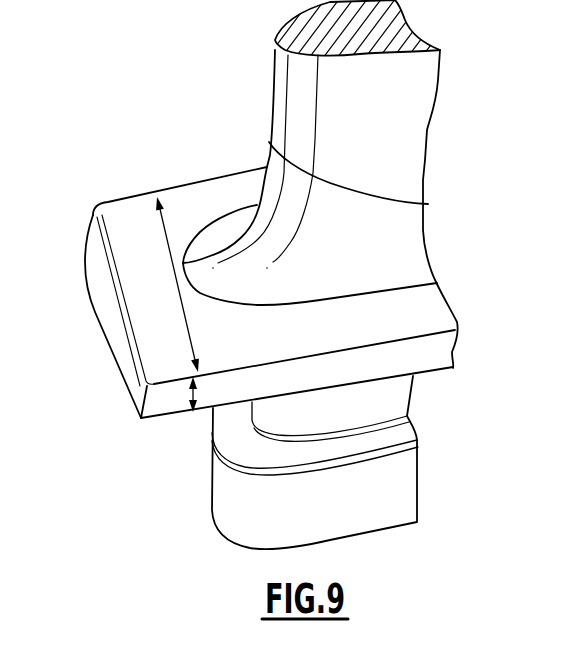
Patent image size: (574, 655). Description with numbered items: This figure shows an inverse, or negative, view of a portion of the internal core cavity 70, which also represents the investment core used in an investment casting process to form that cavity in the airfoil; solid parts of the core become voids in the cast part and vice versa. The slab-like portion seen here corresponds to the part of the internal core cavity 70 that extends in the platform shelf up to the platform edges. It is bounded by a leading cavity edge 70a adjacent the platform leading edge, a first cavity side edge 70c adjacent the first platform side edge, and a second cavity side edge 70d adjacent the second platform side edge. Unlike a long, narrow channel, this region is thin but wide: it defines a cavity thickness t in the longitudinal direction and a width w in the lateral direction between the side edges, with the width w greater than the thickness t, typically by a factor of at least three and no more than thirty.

The internal core cavity 70 is at (405, 150).
The leading cavity edge 70a is at (103, 293).
The first cavity side edge 70c is at (163, 400).
The second cavity side edge 70d is at (127, 200).
The width w is at (160, 223).
The cavity thickness t is at (193, 398).